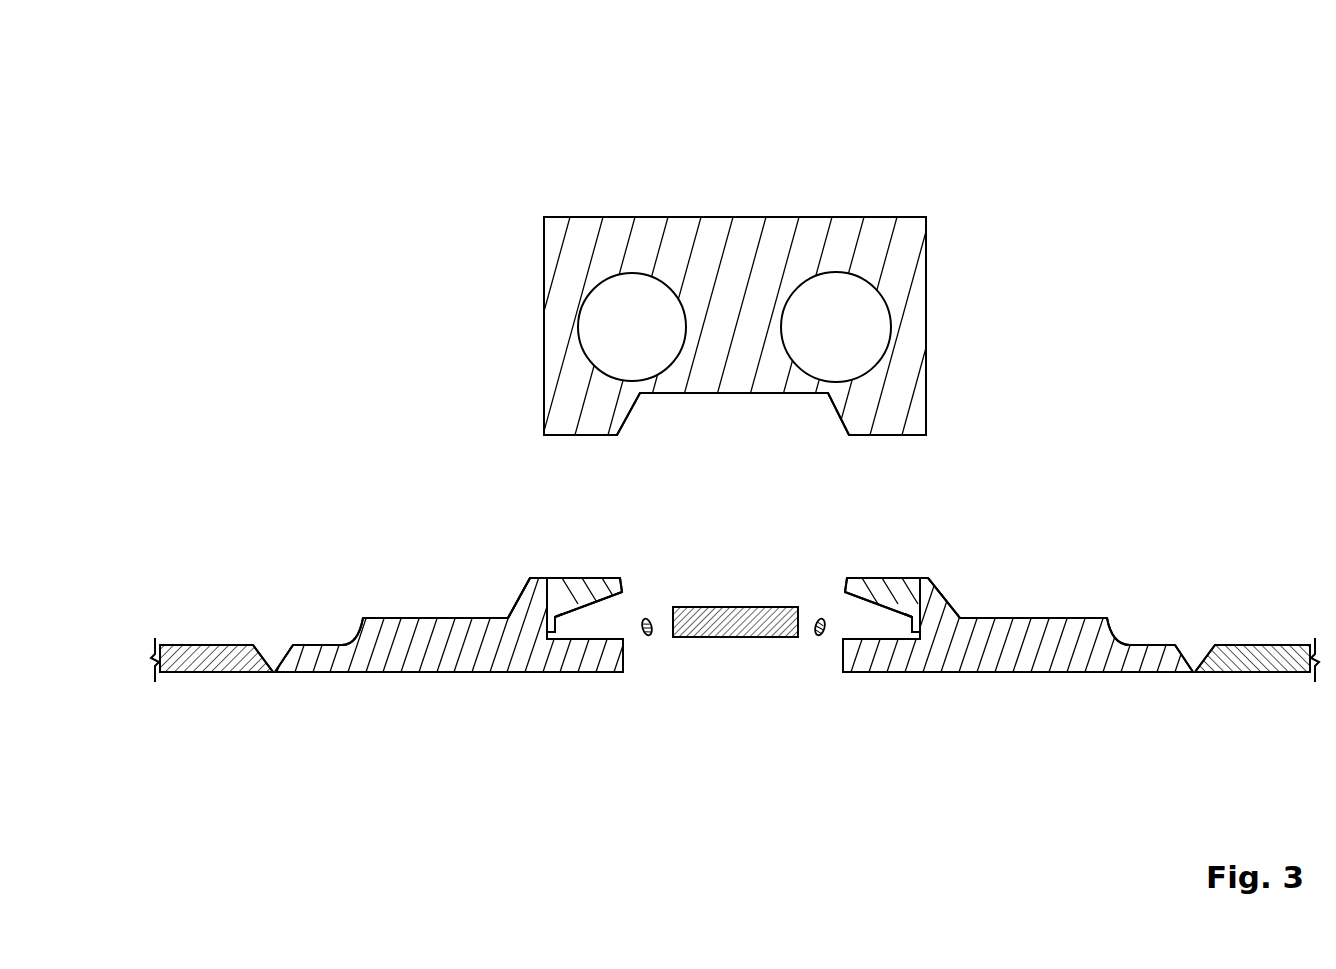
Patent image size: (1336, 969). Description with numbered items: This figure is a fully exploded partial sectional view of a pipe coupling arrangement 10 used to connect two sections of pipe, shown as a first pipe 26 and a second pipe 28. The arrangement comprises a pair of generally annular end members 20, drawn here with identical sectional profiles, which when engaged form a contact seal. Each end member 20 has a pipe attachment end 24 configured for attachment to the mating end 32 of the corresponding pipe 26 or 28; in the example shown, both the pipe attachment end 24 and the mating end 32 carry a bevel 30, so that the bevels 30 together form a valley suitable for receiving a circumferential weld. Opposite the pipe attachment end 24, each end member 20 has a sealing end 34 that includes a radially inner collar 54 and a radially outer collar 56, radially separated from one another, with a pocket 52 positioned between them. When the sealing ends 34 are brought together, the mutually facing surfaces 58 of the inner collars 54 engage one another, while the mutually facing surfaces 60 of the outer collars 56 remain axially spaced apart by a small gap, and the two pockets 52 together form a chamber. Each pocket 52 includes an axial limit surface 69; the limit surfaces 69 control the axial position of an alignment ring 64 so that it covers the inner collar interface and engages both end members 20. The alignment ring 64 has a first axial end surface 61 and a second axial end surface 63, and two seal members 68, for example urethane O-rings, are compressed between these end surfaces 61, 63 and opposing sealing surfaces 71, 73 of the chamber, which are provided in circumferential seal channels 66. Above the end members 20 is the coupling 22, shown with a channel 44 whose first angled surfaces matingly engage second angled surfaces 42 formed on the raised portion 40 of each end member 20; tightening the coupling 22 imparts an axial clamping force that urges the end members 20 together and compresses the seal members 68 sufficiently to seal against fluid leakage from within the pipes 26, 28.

The pipe coupling arrangement 10 is at (1086, 96).
The end member 20 is at (343, 665).
The coupling 22 is at (915, 240).
The pipe attachment end 24 is at (300, 652).
The pipe 26 is at (205, 665).
The pipe 28 is at (1235, 665).
The bevel 30 is at (278, 662).
The mating end 32 is at (200, 645).
The sealing end 34 is at (585, 657).
The rim 40 is at (528, 587).
The second angled surface 42 is at (512, 598).
The channel 44 is at (760, 394).
The pocket 52 is at (614, 589).
The radially inner collar 54 is at (610, 657).
The radially outer collar 56 is at (539, 598).
The mutually facing surface of inner collar 58 is at (625, 657).
The mutually facing surface of outer collar 60 is at (618, 589).
The first axial end surface 61 is at (670, 617).
The second axial end surface 63 is at (800, 617).
The alignment ring 64 is at (688, 627).
The circumferential seal channel 66 is at (540, 627).
The seal member 68 is at (818, 635).
The axial limit surface 69 is at (573, 600).
The sealing surface 71 is at (552, 633).
The sealing surface 73 is at (903, 639).